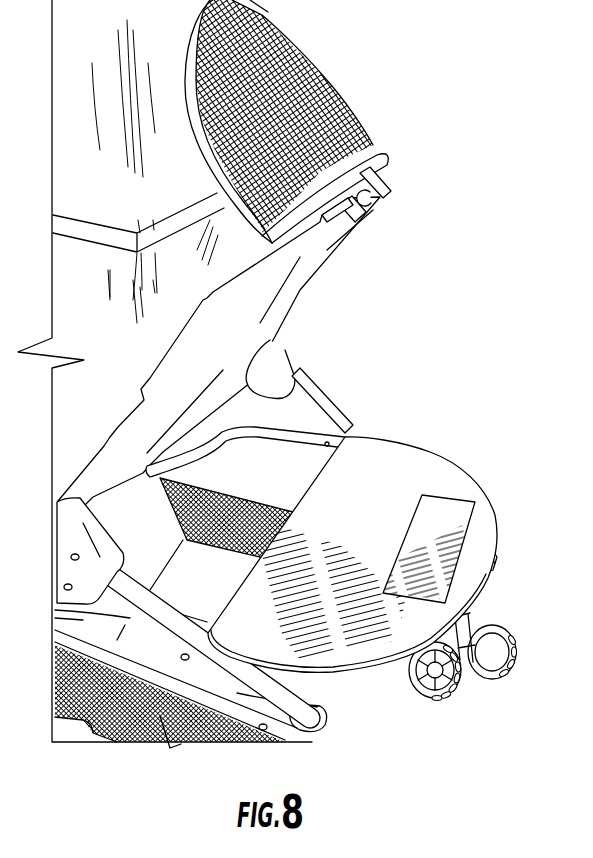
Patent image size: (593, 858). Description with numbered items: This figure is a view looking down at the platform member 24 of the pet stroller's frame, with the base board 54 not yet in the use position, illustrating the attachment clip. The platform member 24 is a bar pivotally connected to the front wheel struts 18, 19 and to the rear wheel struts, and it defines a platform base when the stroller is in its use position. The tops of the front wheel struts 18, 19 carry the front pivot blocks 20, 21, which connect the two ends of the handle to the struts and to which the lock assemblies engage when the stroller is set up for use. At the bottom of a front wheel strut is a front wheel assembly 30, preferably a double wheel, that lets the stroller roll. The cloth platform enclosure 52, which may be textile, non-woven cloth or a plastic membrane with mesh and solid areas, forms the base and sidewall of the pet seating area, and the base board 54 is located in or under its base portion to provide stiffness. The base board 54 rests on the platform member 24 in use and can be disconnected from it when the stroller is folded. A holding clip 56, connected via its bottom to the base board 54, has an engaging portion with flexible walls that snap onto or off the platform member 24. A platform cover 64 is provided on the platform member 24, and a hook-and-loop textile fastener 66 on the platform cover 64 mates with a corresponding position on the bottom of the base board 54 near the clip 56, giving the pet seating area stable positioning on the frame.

The front wheel strut 18 is at (233, 687).
The front wheel strut 19 is at (312, 398).
The front pivot block 20 is at (90, 558).
The front pivot block 21 is at (290, 360).
The platform member 24 is at (293, 432).
The front wheel assembly 30 is at (493, 617).
The cloth platform enclosure 52 is at (317, 72).
The base board 54 is at (293, 287).
The holding clip 56 is at (390, 182).
The platform cover 64 is at (413, 460).
The hook-and-loop textile fastener 66 is at (453, 510).